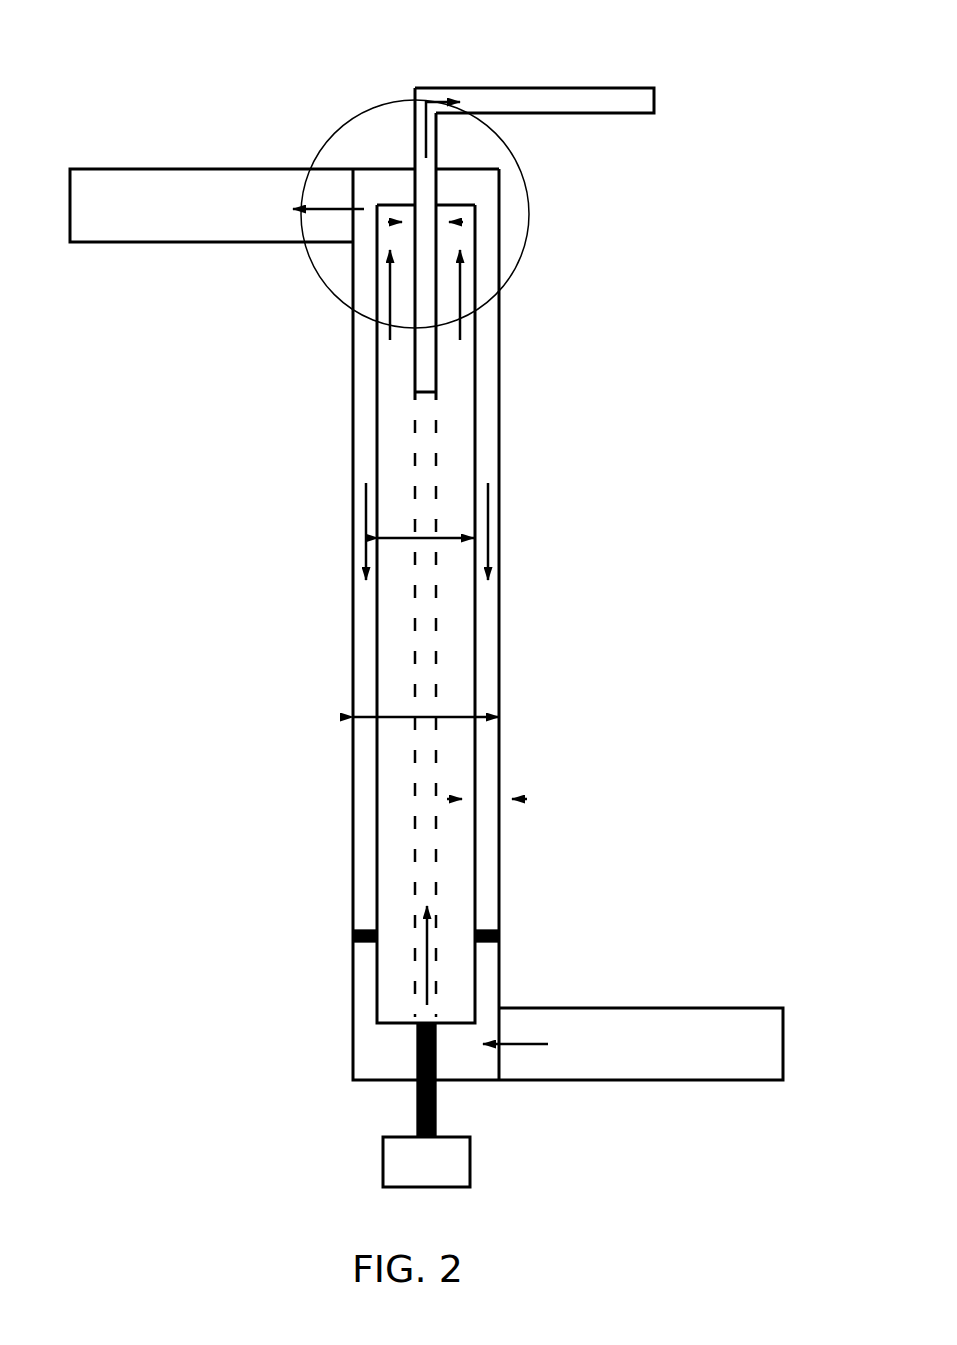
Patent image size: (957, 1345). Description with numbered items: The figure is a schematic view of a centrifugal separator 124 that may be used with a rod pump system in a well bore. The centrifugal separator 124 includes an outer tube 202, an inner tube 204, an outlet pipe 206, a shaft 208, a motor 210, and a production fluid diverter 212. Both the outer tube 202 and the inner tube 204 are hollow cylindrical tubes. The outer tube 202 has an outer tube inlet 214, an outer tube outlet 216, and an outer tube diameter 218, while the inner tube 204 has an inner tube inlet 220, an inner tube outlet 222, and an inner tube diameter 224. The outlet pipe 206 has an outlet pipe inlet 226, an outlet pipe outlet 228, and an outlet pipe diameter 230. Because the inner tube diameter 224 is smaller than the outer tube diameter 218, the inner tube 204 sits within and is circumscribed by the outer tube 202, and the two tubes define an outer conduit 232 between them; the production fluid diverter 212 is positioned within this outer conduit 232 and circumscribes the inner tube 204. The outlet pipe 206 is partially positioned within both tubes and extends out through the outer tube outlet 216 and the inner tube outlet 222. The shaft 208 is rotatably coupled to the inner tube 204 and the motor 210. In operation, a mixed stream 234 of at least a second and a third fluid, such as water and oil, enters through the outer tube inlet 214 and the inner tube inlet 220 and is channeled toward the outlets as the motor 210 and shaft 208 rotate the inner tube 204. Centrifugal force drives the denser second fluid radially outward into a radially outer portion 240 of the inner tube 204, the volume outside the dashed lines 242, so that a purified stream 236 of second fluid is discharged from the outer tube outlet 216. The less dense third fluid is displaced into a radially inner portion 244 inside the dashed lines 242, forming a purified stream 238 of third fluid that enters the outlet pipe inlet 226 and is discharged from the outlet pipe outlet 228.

The centrifugal separator 124 is at (148, 392).
The outer tube 202 is at (350, 380).
The inner tube 204 is at (377, 843).
The outlet pipe 206 is at (413, 90).
The shaft 208 is at (417, 1108).
The motor 210 is at (383, 1162).
The production fluid diverter 212 is at (367, 930).
The outer tube inlet 214 is at (500, 1027).
The outer tube outlet 216 is at (350, 188).
The outer tube diameter 218 is at (458, 715).
The inner tube inlet 220 is at (455, 1022).
The inner tube outlet 222 is at (393, 203).
The inner tube diameter 224 is at (448, 537).
The outlet pipe inlet 226 is at (427, 388).
The outlet pipe outlet 228 is at (654, 100).
The outlet pipe diameter 230 is at (458, 217).
The outer conduit 232 is at (487, 795).
The mixed stream 234 is at (523, 1052).
The purified stream of second fluid 236 is at (323, 216).
The purified stream of third fluid 238 is at (443, 97).
The radially outer portion 240 is at (490, 838).
The dashed lines 242 is at (414, 690).
The radially inner portion 244 is at (425, 433).